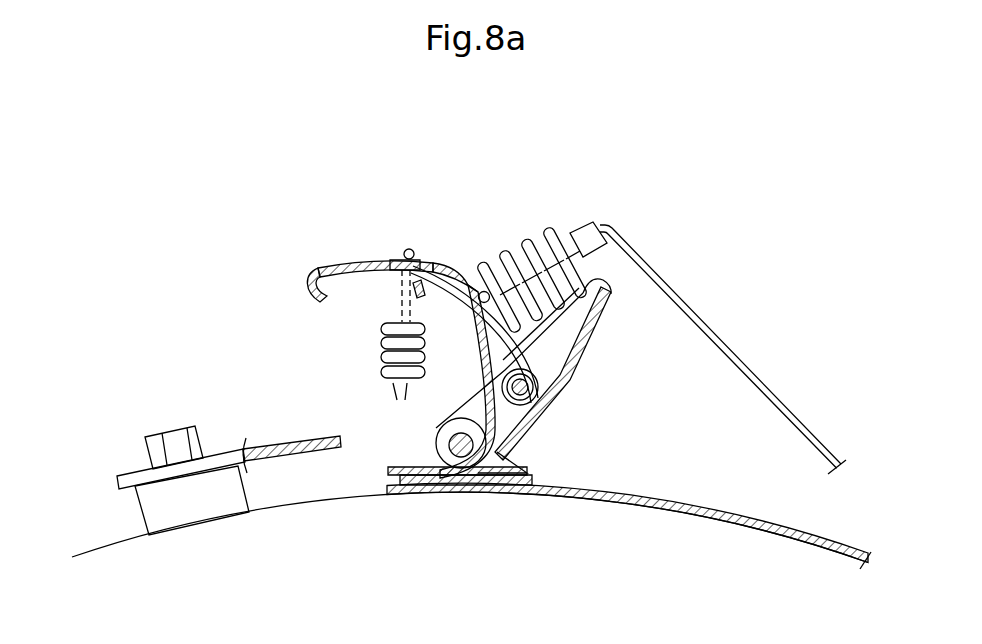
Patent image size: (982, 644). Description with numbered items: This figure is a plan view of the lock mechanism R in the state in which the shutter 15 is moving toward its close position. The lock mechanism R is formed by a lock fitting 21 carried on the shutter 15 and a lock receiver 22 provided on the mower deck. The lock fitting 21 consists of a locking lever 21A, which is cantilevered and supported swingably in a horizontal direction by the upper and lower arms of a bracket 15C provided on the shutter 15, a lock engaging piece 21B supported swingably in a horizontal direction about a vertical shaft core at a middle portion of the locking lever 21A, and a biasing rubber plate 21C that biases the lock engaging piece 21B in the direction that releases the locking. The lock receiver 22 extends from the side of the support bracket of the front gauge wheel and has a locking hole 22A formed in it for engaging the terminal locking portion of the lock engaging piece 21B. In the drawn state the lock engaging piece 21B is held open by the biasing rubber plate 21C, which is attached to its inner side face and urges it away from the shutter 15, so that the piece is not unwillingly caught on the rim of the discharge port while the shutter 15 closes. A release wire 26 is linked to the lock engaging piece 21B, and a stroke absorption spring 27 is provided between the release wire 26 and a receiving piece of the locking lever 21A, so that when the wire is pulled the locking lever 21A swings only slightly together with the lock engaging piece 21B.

The shutter 15 is at (683, 502).
The bracket 15C is at (489, 483).
The lock fitting 21 is at (380, 319).
The locking lever 21A is at (570, 362).
The lock engaging piece 21B is at (366, 262).
The biasing rubber plate 21C is at (461, 265).
The lock receiver 22 is at (222, 448).
The locking hole 22A is at (298, 446).
The release wire 26 is at (703, 322).
The stroke absorption spring 27 is at (527, 237).
The lock mechanism R is at (316, 242).